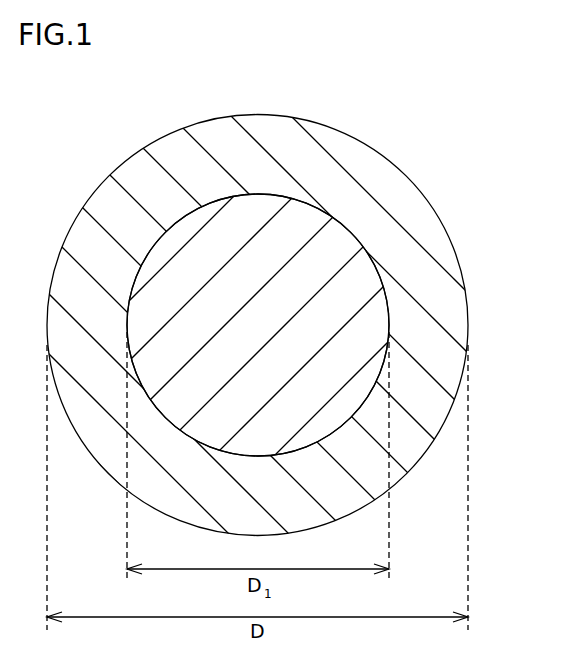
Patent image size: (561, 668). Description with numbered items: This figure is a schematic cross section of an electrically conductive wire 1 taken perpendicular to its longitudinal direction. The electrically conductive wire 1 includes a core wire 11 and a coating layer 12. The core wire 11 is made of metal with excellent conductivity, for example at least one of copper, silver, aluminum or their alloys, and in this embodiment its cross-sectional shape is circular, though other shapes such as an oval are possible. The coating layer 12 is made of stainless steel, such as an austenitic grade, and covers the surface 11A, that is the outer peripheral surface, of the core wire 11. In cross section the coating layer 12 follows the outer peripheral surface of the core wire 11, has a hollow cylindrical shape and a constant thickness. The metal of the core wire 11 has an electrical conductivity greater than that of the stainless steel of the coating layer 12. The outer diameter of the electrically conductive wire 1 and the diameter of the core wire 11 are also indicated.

The electrically conductive wire 1 is at (430, 133).
The core wire 11 is at (337, 313).
The surface of the core wire 11A is at (256, 195).
The coating layer 12 is at (423, 217).